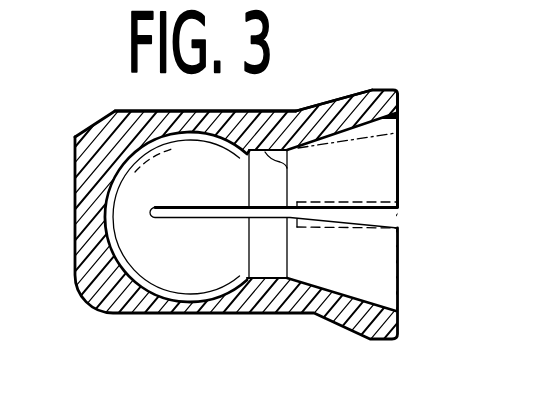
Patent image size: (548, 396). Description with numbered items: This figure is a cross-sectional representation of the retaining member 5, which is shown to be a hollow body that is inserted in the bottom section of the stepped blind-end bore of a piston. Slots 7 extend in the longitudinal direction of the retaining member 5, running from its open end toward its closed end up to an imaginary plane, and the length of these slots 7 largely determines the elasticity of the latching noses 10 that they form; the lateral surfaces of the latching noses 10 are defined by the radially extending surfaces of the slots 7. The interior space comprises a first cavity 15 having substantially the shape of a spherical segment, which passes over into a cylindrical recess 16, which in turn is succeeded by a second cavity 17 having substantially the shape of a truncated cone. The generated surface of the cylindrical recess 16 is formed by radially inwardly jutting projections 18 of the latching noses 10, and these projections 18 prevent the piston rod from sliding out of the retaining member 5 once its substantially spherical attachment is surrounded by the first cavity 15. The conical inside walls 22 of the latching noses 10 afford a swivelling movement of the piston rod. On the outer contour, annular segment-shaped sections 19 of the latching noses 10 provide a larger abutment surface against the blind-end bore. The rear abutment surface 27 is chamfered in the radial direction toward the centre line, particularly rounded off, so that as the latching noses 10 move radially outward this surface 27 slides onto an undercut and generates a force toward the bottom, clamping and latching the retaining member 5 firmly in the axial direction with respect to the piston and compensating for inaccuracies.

The retaining member 5 is at (98, 146).
The slots 7 is at (168, 215).
The latching noses 10 is at (296, 134).
The first cavity 15 is at (177, 262).
The cylindrical recess 16 is at (267, 252).
The second cavity 17 is at (348, 273).
The projections 18 is at (287, 172).
The annular segment-shaped sections 19 is at (377, 90).
The conical inside walls 22 is at (358, 128).
The rear abutment surface 27 is at (399, 98).